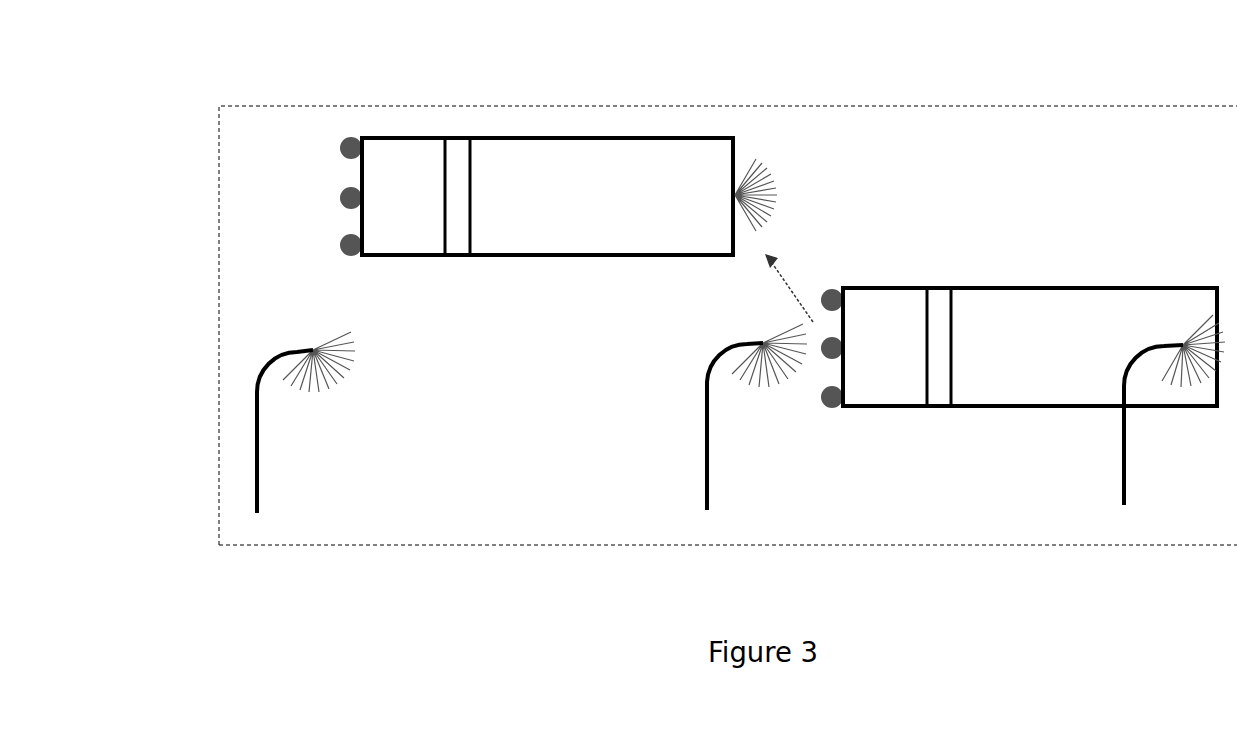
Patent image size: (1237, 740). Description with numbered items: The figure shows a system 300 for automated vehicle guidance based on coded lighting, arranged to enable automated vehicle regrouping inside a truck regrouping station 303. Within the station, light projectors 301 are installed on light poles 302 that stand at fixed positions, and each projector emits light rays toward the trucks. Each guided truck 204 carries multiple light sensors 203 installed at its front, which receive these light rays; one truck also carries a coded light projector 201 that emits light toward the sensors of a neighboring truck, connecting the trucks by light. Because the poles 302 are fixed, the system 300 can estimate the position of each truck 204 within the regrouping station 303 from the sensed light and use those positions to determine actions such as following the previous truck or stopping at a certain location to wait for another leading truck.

The system for automated vehicle guidance 300 is at (696, 285).
The truck regrouping station 303 is at (505, 105).
The light sensors 203 is at (345, 151).
The guided truck 204 is at (789, 272).
The coded light projector 201 is at (782, 192).
The light projectors 301 is at (310, 337).
The light poles 302 is at (255, 478).